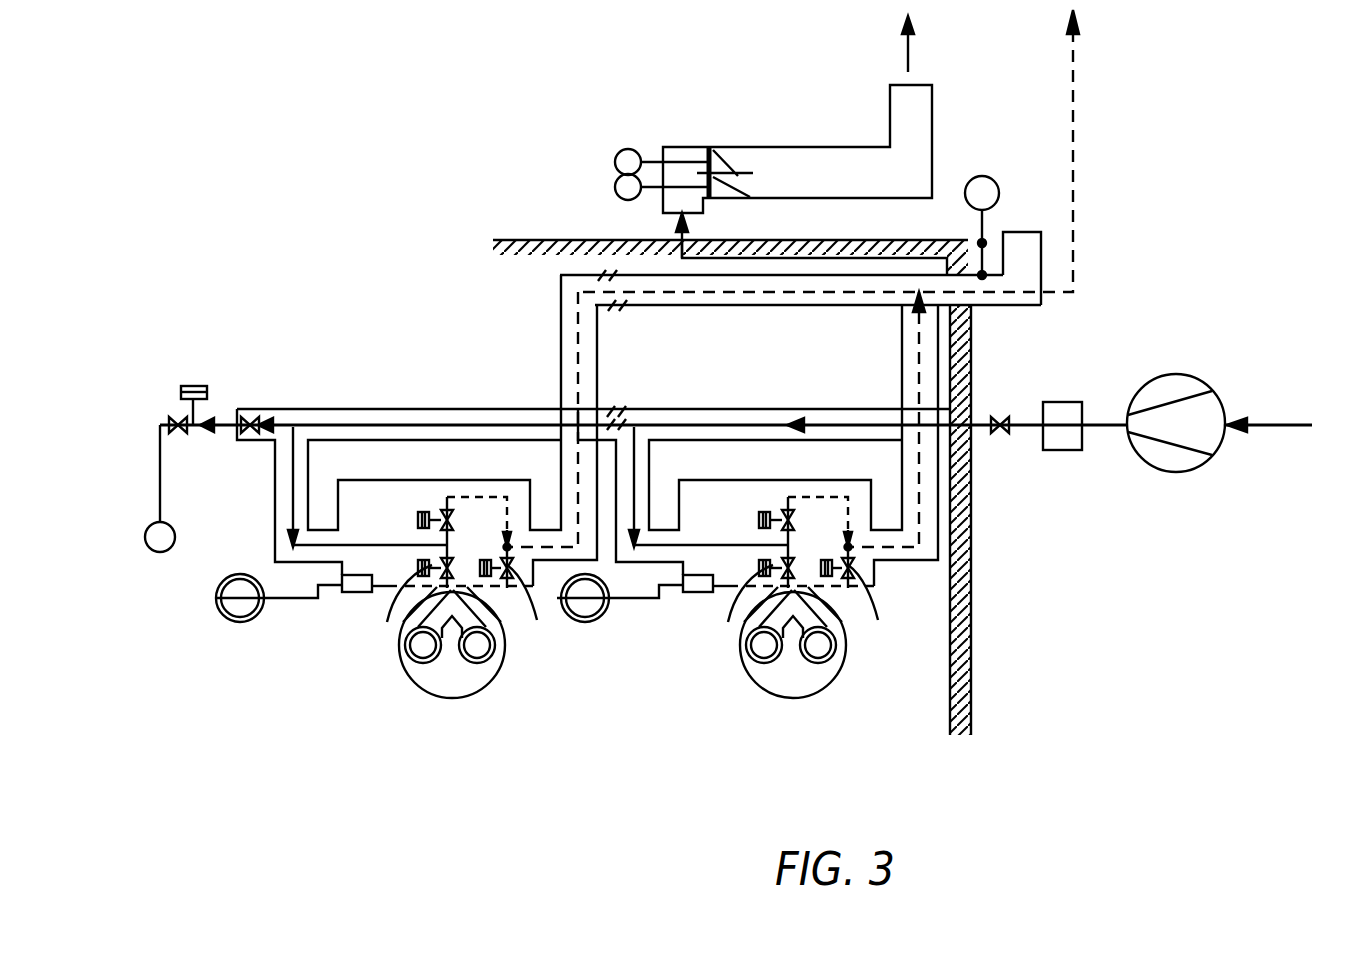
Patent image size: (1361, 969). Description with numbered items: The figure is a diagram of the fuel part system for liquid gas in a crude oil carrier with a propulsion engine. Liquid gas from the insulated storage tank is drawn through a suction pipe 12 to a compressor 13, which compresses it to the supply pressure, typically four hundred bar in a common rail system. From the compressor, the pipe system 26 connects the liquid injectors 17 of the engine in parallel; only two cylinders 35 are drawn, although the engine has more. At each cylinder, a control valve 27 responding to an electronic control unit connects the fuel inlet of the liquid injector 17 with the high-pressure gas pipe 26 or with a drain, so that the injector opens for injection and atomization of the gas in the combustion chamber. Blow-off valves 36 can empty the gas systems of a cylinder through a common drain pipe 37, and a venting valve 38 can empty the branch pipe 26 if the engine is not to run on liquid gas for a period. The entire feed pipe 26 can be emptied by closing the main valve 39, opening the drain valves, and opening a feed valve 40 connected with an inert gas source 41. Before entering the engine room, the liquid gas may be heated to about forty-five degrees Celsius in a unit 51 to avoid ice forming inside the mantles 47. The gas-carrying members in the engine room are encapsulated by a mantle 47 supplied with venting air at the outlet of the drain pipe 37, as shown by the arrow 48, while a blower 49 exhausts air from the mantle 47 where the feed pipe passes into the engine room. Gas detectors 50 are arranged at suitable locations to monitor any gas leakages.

The suction pipe 12 is at (1263, 424).
The compressor 13 is at (1180, 458).
The liquid injector 17 is at (417, 653).
The pipe system 26 is at (700, 424).
The control valve 27 is at (397, 608).
The cylinder 35 is at (447, 682).
The blow-off valve 36 is at (527, 615).
The common drain pipe 37 is at (1074, 95).
The venting valve 38 is at (452, 520).
The main valve 39 is at (1002, 434).
The feed valve 40 is at (190, 433).
The inert gas source 41 is at (175, 537).
The mantle 47 is at (402, 409).
The arrow 48 is at (1024, 232).
The blower 49 is at (714, 168).
The gas detector 50 is at (240, 615).
The unit 51 is at (1060, 412).